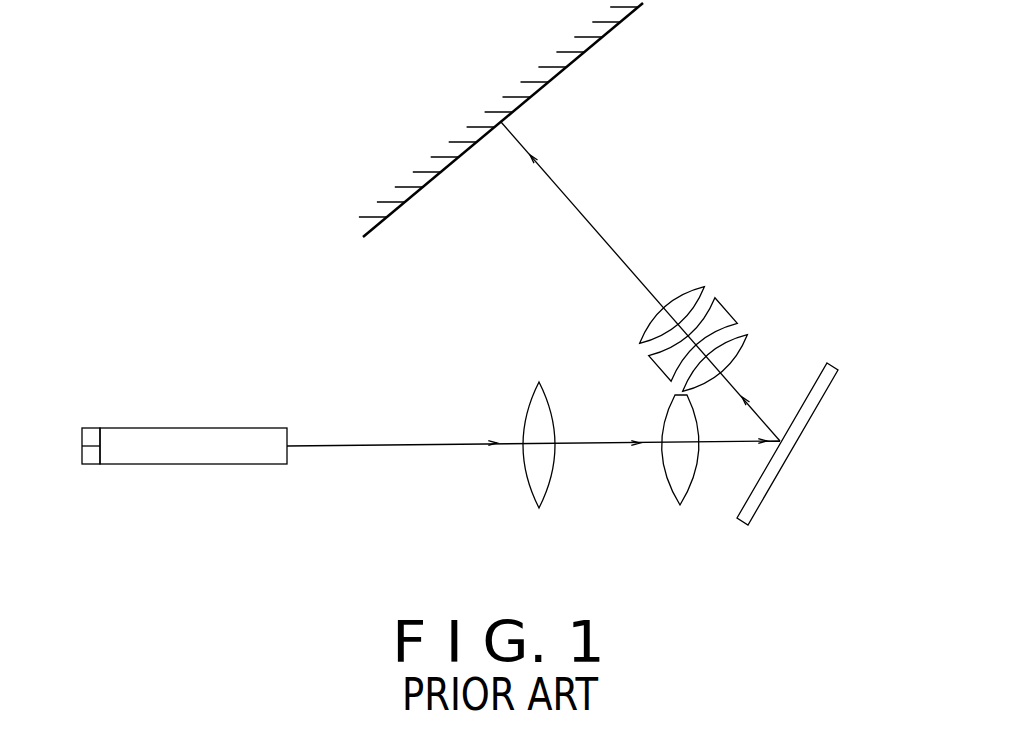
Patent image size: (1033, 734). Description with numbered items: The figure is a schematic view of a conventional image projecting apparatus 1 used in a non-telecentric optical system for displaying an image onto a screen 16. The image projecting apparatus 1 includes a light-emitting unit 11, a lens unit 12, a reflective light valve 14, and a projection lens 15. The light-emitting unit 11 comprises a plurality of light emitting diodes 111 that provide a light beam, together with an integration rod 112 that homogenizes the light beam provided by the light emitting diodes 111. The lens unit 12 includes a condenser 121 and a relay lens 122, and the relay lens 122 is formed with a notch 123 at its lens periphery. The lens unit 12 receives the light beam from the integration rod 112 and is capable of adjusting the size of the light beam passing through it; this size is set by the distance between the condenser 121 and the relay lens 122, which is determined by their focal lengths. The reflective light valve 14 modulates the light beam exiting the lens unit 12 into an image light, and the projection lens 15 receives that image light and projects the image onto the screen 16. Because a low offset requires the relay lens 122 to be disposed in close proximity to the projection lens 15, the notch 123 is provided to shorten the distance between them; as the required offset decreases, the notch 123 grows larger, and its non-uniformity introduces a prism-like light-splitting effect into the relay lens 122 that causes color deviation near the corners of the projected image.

The image projecting apparatus 1 is at (803, 465).
The light-emitting unit 11 is at (147, 459).
The light emitting diodes 111 is at (89, 436).
The integration rod 112 is at (187, 437).
The lens unit 12 is at (593, 382).
The condenser 121 is at (533, 421).
The relay lens 122 is at (673, 437).
The notch 123 is at (680, 392).
The reflective light valve 14 is at (823, 383).
The projection lens 15 is at (732, 298).
The screen 16 is at (582, 73).